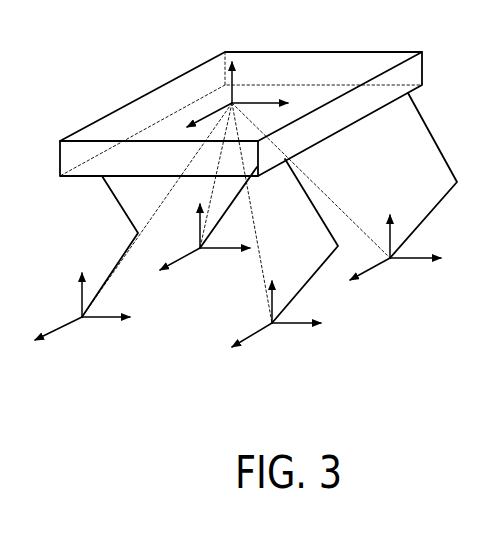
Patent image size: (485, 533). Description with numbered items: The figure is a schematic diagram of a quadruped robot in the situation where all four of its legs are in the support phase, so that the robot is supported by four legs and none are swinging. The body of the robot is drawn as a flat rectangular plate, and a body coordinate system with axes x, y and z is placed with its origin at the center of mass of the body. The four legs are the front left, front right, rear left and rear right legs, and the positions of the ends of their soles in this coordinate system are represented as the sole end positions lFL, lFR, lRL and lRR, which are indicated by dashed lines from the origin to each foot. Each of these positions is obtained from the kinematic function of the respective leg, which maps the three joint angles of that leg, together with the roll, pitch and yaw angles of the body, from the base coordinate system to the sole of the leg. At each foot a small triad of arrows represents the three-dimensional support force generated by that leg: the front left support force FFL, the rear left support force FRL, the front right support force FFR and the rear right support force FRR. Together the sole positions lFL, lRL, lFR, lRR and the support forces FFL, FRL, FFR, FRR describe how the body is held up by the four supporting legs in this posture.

The x axis x is at (196, 117).
The y axis y is at (277, 86).
The z axis z is at (239, 60).
The front left sole end position lFL is at (110, 246).
The rear left sole end position lRL is at (220, 207).
The front right sole end position lFR is at (303, 241).
The rear right sole end position lRR is at (396, 175).
The front left support force FFL is at (79, 306).
The rear left support force FRL is at (199, 237).
The front right support force FFR is at (276, 324).
The rear right support force FRR is at (395, 257).